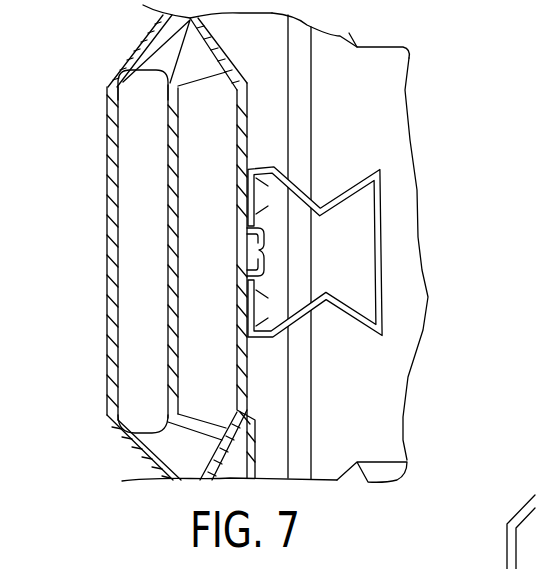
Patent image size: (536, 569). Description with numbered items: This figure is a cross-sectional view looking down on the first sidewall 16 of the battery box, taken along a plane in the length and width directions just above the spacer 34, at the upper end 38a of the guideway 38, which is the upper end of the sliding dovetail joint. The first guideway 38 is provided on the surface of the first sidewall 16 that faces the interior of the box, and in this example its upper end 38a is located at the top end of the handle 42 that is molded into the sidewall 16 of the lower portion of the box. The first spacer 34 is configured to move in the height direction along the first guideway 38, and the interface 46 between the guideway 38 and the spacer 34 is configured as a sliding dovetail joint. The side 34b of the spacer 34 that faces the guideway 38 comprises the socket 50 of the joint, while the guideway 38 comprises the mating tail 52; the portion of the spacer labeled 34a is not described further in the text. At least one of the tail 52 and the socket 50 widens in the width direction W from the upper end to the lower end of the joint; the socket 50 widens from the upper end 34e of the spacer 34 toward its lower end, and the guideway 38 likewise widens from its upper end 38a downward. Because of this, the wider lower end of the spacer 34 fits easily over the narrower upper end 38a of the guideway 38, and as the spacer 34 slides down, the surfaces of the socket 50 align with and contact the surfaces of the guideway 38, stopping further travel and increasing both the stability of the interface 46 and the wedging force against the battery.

The first sidewall 16 is at (272, 436).
The handle 42 is at (183, 83).
The width direction W is at (70, 285).
The first spacer 34 is at (388, 312).
The first leg 34a is at (386, 186).
The side of the first spacer 34b is at (246, 324).
The upper end of the spacer 34e is at (264, 158).
The first guideway 38 is at (308, 206).
The upper end of the first guideway 38a is at (235, 238).
The first interface 46 is at (255, 250).
The socket 50 is at (287, 247).
The tail 52 is at (303, 267).